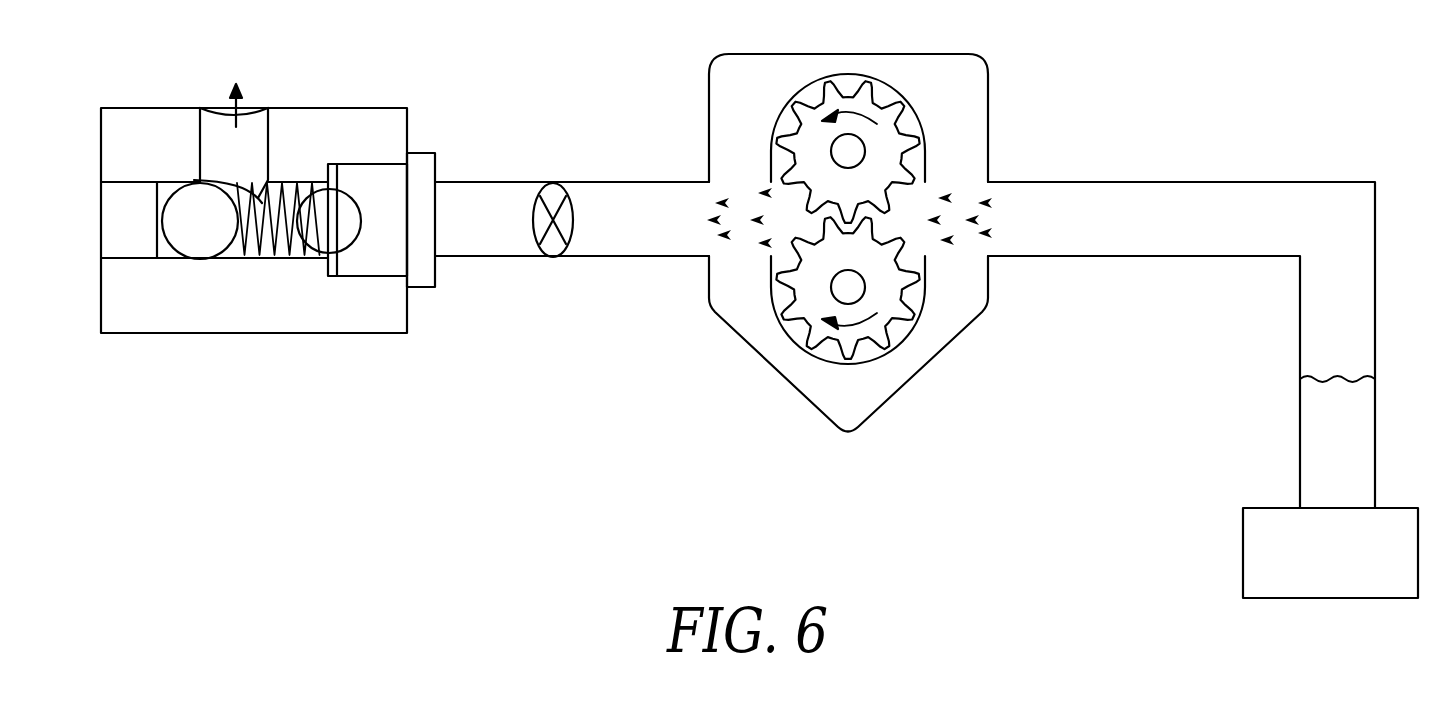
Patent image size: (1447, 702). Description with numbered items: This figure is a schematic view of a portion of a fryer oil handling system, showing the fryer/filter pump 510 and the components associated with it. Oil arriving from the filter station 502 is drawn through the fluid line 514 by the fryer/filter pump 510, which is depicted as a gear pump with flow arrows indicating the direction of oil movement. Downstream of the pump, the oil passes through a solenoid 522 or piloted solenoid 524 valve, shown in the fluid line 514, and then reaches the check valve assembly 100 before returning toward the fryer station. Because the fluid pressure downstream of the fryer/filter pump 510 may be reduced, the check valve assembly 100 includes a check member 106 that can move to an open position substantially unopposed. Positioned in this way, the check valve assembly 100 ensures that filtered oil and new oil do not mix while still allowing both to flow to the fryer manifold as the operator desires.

The check valve assembly 100 is at (125, 108).
The check member 106 is at (323, 230).
The filter station 502 is at (1262, 507).
The fryer/filter pump 510 is at (845, 420).
The fluid line 514 is at (480, 259).
The solenoid valve 522 is at (552, 192).
The piloted solenoid valve 524 is at (553, 220).